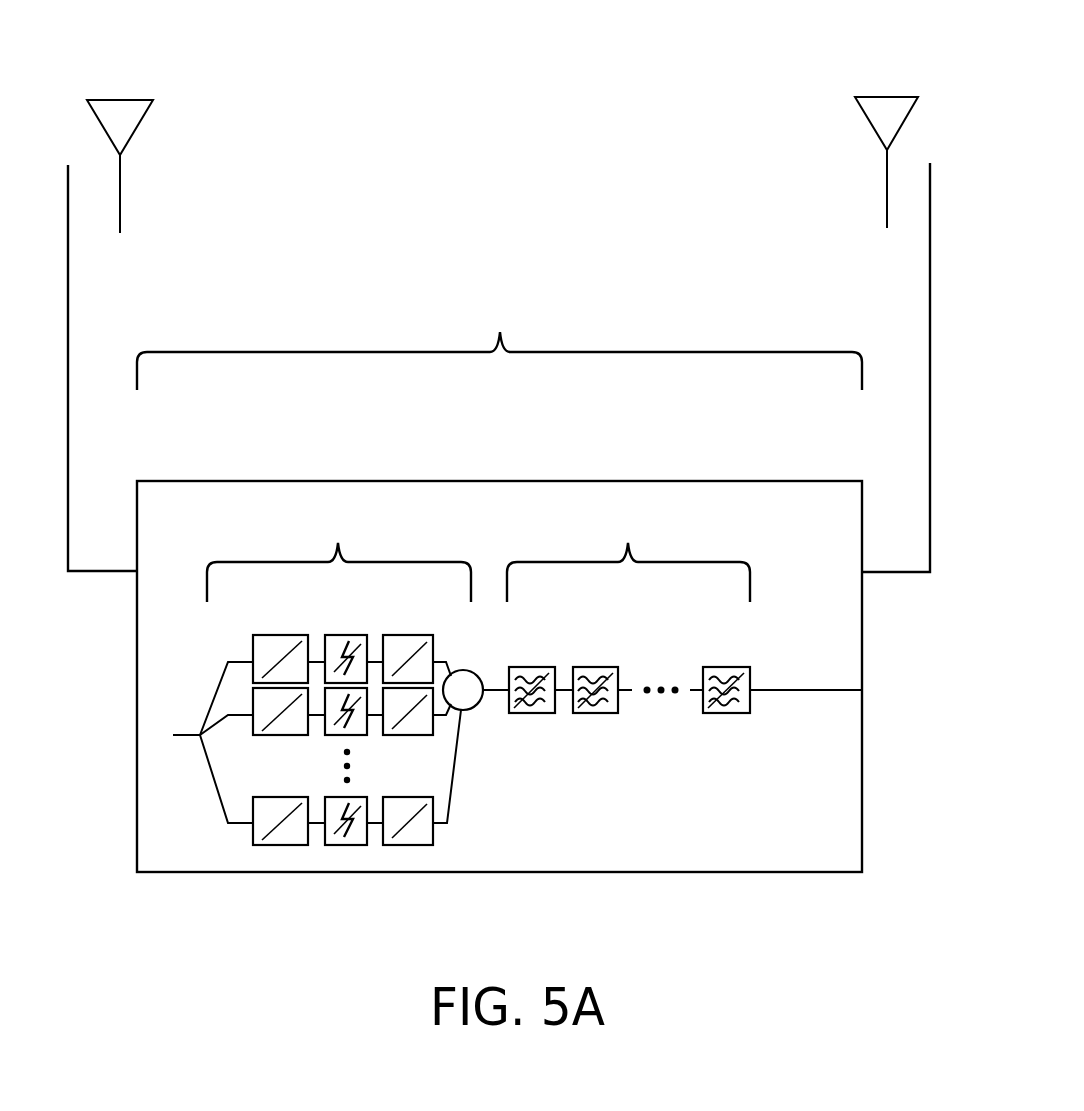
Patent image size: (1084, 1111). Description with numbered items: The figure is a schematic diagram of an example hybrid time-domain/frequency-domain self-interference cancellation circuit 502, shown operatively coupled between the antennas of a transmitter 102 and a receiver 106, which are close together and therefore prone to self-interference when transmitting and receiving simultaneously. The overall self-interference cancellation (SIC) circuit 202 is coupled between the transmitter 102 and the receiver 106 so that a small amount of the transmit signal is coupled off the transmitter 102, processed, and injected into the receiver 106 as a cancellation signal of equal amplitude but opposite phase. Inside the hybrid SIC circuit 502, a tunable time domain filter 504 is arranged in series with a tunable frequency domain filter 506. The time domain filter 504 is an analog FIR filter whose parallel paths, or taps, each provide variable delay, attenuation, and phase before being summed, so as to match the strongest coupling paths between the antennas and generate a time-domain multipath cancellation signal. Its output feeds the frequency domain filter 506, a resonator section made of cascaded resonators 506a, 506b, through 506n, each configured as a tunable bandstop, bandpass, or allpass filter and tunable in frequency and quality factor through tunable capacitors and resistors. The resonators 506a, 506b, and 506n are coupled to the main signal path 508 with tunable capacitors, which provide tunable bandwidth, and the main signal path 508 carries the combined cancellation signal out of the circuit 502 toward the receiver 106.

The transmitter 102 is at (118, 78).
The receiver 106 is at (893, 67).
The self-interference cancellation (SIC) circuit 202 is at (499, 342).
The hybrid time-domain/frequency-domain SIC circuit 502 is at (667, 481).
The tunable time domain filter 504 is at (328, 681).
The tunable frequency domain filter 506 is at (616, 604).
The resonator 506a is at (518, 713).
The resonator 506b is at (605, 713).
The resonator 506n is at (730, 713).
The main signal path 508 is at (805, 690).